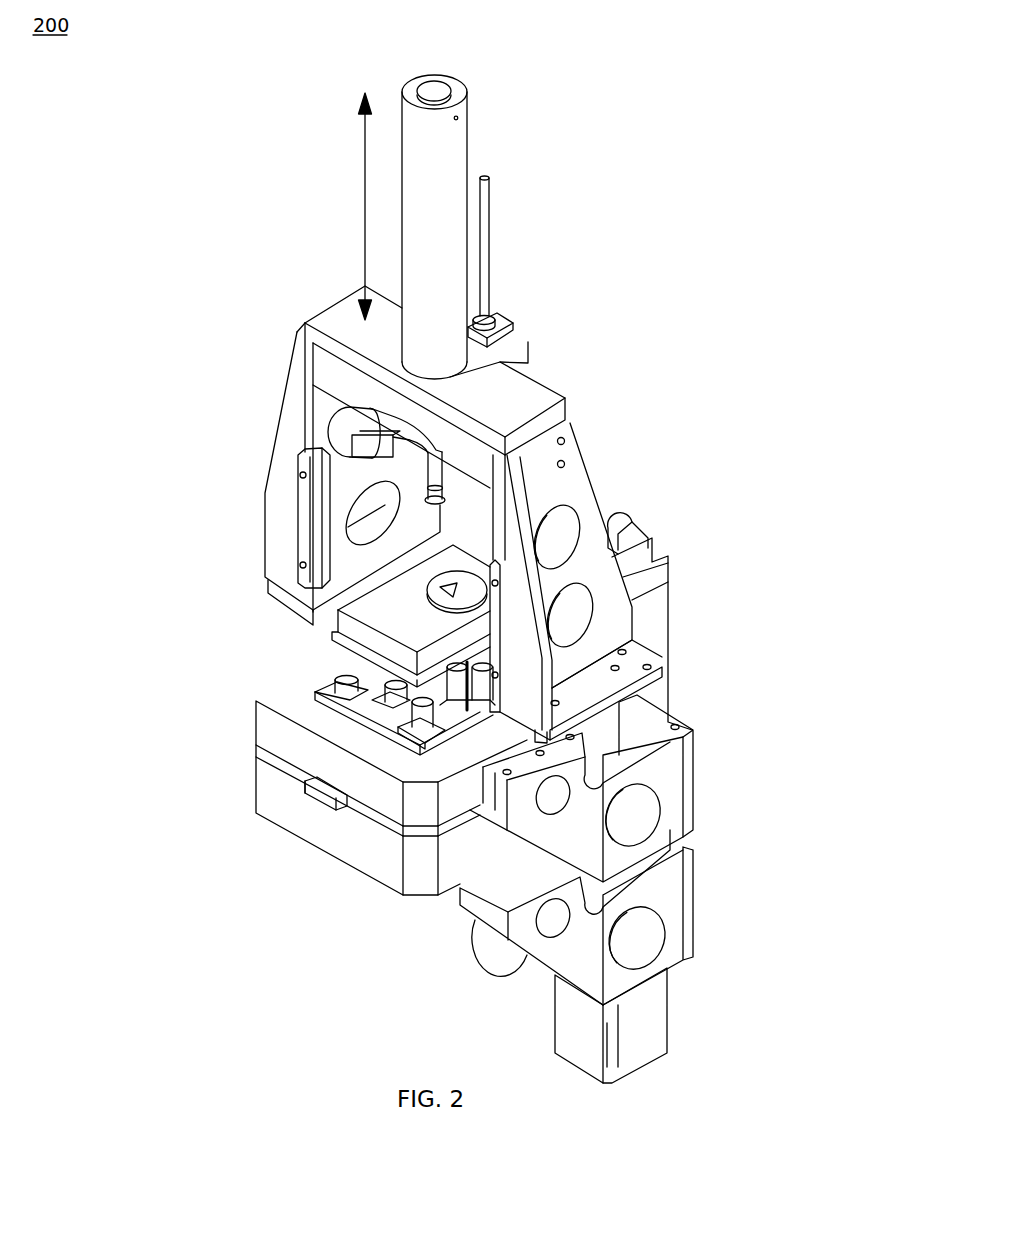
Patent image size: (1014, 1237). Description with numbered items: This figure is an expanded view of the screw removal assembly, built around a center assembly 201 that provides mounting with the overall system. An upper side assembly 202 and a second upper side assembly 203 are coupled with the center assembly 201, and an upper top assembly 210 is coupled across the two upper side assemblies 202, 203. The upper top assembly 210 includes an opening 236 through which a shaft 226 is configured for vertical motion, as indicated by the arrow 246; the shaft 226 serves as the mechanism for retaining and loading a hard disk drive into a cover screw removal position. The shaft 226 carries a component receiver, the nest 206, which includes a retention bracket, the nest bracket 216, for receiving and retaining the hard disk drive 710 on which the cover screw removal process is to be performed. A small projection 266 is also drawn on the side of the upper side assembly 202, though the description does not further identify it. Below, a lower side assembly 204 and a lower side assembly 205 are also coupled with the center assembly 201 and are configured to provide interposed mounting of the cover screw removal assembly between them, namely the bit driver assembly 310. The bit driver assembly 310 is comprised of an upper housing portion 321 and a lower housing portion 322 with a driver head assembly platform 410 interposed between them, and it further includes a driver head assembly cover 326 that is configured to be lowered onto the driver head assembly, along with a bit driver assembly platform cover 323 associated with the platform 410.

The center assembly 201 is at (652, 608).
The upper side assembly 202 is at (555, 490).
The upper side assembly 203 is at (280, 485).
The lower side assembly 204 is at (655, 770).
The lower side assembly 205 is at (302, 648).
The nest 206 is at (350, 413).
The upper top assembly 210 is at (507, 397).
The nest bracket 216 is at (337, 435).
The shaft 226 is at (443, 202).
The opening 236 is at (527, 343).
The arrow 246 is at (363, 197).
The hook 266 is at (620, 515).
The bit driver assembly 310 is at (397, 895).
The upper housing portion 321 is at (280, 730).
The lower housing portion 322 is at (280, 815).
The bit driver assembly platform cover 323 is at (363, 712).
The driver head assembly cover 326 is at (340, 650).
The driver head assembly platform 410 is at (280, 763).
The hard disk drive 710 is at (400, 617).